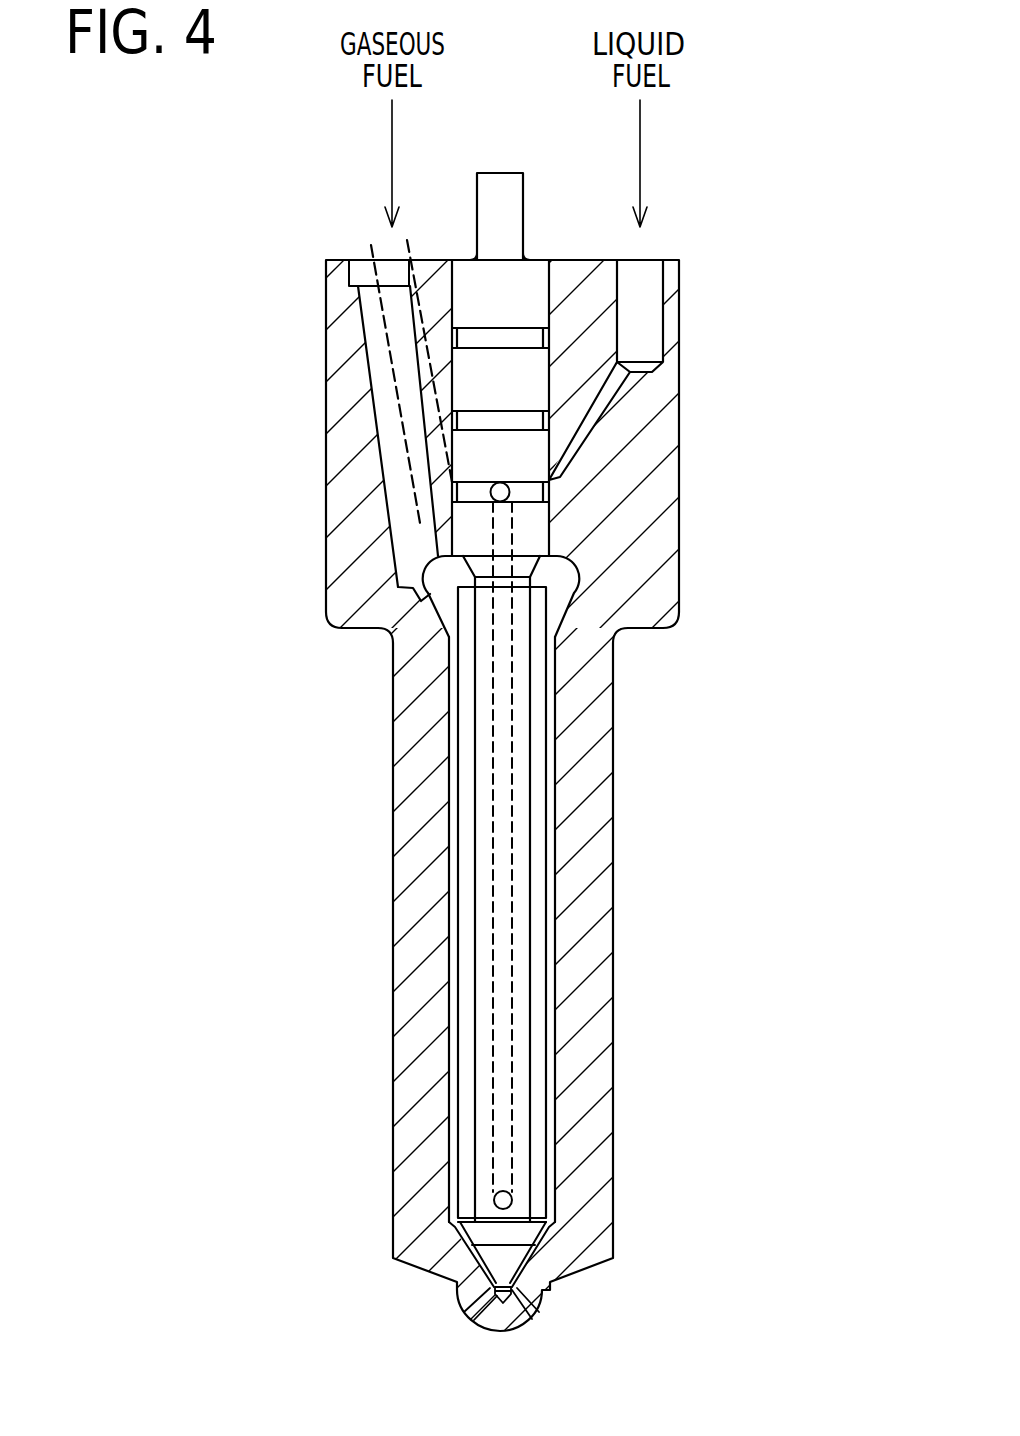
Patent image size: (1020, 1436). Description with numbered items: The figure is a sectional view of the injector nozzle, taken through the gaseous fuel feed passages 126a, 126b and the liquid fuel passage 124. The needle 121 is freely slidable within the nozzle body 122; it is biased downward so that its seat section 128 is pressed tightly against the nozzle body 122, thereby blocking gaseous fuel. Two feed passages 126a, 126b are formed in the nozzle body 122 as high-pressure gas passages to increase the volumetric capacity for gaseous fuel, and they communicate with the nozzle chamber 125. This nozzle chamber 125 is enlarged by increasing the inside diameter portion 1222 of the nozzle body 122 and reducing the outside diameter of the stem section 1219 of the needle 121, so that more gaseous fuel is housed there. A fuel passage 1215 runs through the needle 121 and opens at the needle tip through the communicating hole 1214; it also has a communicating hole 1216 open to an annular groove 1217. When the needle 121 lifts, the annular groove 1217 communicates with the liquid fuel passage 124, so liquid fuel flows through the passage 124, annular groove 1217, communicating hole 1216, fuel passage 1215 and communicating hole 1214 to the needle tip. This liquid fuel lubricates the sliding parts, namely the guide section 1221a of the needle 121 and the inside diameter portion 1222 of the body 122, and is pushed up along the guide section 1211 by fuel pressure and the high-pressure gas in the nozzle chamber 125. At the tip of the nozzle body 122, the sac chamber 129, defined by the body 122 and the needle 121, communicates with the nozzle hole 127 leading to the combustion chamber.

The needle 121 is at (487, 728).
The guide section 1211 is at (467, 525).
The communicating hole 1214 is at (507, 1195).
The fuel passage 1215 is at (505, 757).
The communicating hole 1216 is at (535, 488).
The annular groove 1217 is at (510, 493).
The stem section 1219 is at (517, 990).
The nozzle body 122 is at (410, 905).
The guide section 1221a is at (538, 308).
The inside diameter portion 1222 is at (565, 852).
The liquid fuel passage 124 is at (607, 397).
The nozzle chamber 125 is at (540, 923).
The feed passage 126a is at (364, 410).
The feed passage 126b is at (388, 433).
The nozzle hole 127 is at (480, 1303).
The seat section 128 is at (483, 1235).
The sac chamber 129 is at (513, 1298).